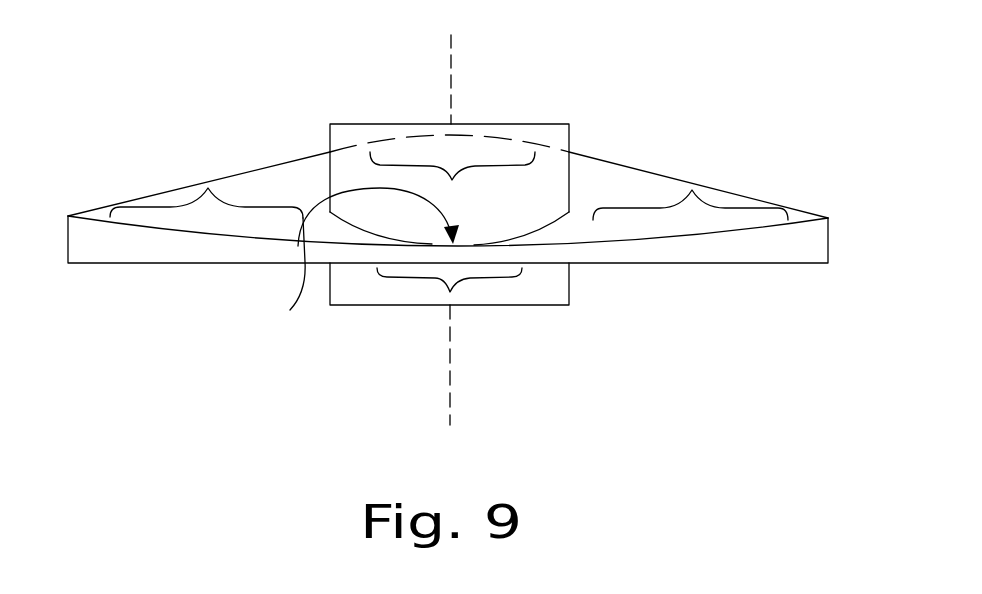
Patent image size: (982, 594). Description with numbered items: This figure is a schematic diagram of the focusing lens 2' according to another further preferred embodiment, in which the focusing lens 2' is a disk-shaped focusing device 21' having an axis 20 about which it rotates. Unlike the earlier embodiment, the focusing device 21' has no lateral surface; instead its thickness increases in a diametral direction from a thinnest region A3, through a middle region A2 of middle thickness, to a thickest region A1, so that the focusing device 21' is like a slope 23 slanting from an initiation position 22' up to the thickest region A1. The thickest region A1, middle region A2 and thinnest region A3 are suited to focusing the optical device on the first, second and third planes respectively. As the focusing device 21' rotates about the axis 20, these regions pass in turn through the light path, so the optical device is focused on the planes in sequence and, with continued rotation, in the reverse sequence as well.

The focusing lens 2' is at (417, 163).
The axis 20 is at (449, 395).
The focusing device 21' is at (448, 286).
The initiation position 22' is at (268, 282).
The slope 23 is at (582, 226).
The thickest region A1 is at (477, 167).
The middle region A2 is at (260, 207).
The thinnest region A3 is at (487, 277).